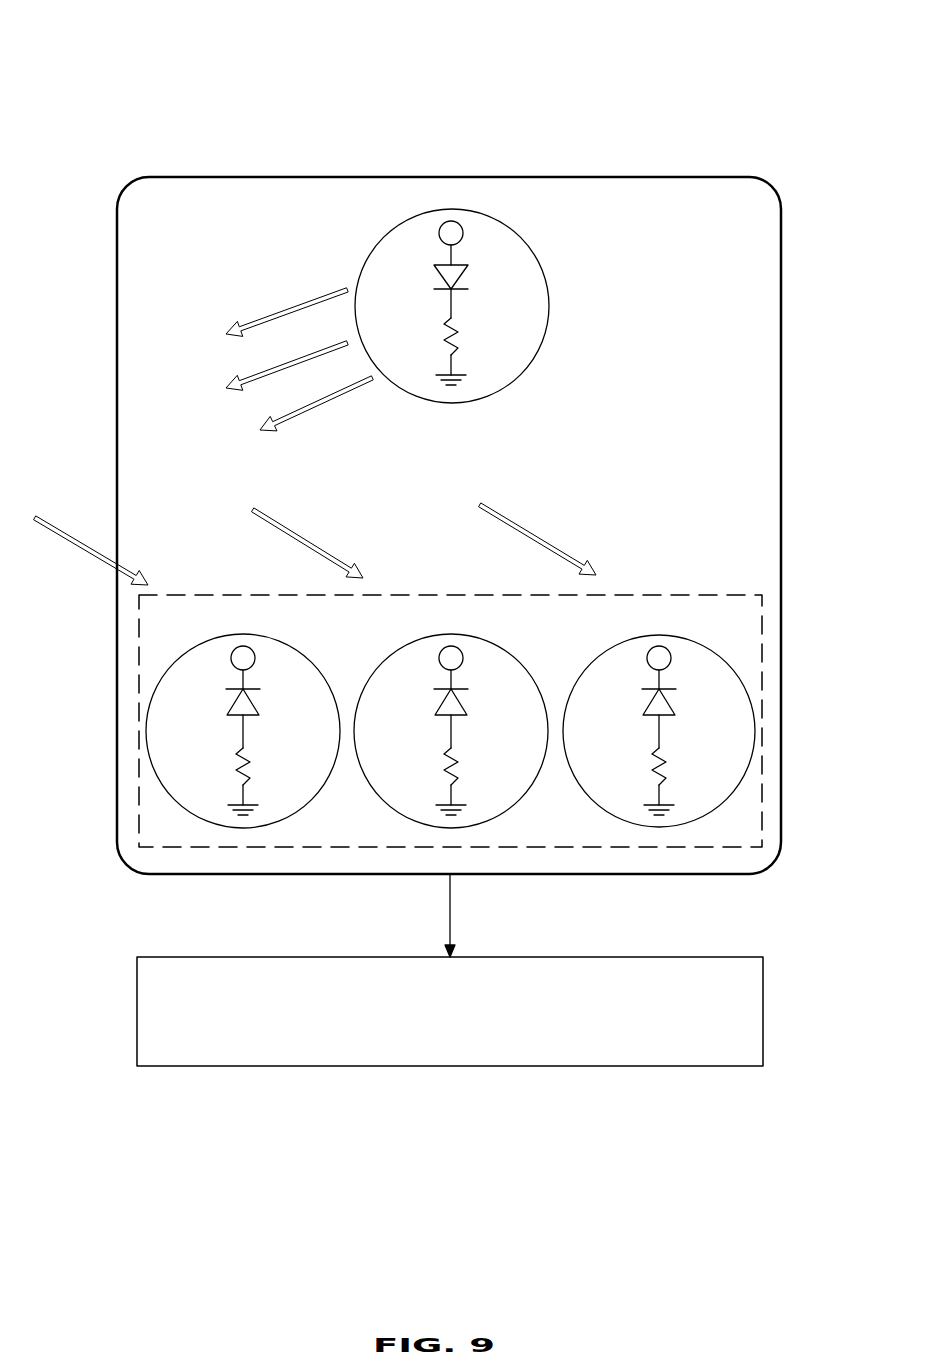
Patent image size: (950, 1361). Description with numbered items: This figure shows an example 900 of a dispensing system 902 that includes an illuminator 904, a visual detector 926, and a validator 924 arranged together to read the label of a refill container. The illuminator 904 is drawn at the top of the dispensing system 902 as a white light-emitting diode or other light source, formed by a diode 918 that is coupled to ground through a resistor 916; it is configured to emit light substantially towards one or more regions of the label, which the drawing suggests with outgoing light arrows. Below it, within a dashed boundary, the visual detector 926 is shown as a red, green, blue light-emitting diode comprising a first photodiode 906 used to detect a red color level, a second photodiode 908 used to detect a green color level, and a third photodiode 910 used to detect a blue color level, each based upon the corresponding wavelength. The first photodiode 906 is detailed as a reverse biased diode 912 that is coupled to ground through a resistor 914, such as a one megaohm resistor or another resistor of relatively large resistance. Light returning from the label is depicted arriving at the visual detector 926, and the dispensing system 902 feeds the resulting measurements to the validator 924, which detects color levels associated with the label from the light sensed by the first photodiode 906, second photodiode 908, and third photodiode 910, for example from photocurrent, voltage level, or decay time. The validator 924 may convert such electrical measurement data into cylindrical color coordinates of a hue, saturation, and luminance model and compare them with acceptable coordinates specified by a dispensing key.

The example 900 is at (163, 60).
The dispensing system 902 is at (583, 177).
The illuminator 904 is at (385, 232).
The first photodiode 906 is at (250, 635).
The second photodiode 908 is at (457, 634).
The third photodiode 910 is at (665, 634).
The reverse biased diode 912 is at (229, 707).
The resistor 914 is at (236, 771).
The resistor 916 is at (455, 344).
The diode 918 is at (463, 271).
The validator 924 is at (625, 957).
The visual detector 926 is at (645, 595).